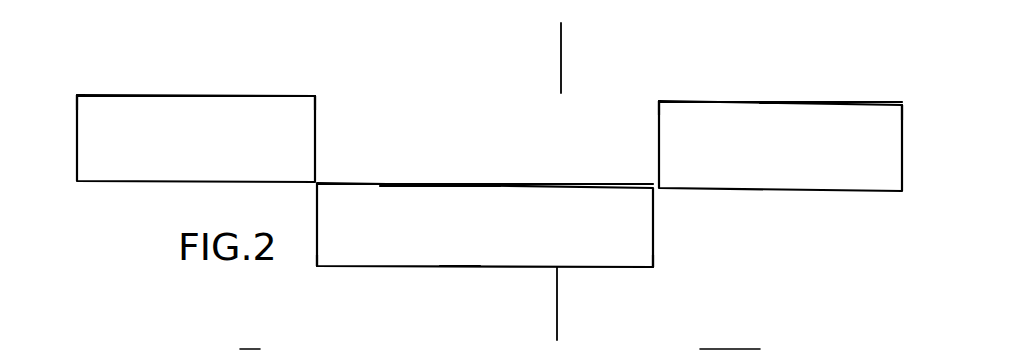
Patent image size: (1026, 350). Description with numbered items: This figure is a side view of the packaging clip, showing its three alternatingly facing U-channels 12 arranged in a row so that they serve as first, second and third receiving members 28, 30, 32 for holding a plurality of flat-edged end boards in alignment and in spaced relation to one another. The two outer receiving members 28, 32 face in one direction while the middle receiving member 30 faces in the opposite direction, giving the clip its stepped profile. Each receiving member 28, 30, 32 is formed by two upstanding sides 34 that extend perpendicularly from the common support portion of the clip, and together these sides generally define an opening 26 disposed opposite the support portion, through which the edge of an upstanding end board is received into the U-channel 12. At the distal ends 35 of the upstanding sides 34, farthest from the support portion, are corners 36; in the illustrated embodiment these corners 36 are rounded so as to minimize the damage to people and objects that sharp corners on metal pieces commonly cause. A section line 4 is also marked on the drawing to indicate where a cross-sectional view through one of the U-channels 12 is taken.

The section line 4- 4 is at (546, 65).
The U-channel 12 is at (189, 78).
The opening 26 is at (251, 349).
The first receiving member 28 is at (100, 182).
The second receiving member 30 is at (360, 182).
The third receiving member 32 is at (766, 191).
The upstanding side 34 is at (215, 113).
The distal end 35 is at (136, 94).
The corner 36 is at (77, 95).